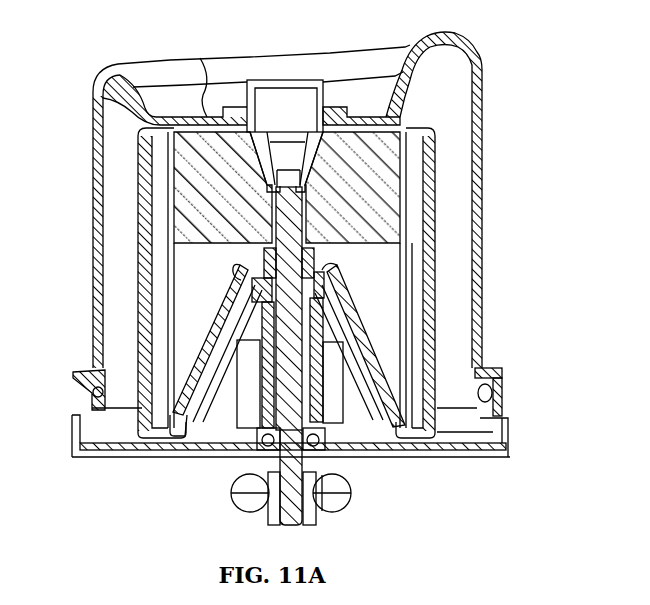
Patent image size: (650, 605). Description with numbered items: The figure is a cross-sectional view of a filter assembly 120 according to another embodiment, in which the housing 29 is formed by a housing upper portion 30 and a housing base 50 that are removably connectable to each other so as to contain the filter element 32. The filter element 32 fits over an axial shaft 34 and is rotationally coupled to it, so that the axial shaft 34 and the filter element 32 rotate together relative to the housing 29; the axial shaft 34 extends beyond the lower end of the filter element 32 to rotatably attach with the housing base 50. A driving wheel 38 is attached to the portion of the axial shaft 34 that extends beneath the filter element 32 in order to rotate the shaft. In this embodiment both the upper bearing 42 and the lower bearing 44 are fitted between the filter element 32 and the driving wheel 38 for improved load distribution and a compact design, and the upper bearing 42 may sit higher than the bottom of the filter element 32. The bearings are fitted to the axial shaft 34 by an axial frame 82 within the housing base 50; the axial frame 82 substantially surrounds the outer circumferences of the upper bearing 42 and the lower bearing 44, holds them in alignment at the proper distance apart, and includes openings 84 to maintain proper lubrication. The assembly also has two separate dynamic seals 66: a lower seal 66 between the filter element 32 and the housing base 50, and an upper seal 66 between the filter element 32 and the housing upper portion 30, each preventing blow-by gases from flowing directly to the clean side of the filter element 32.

The filter assembly 120 is at (150, 36).
The housing 29 is at (486, 96).
The housing upper portion 30 is at (486, 129).
The filter element 32 is at (436, 278).
The axial shaft 34 is at (290, 272).
The driving wheel 38 is at (233, 509).
The upper bearing 42 is at (236, 304).
The lower bearing 44 is at (236, 427).
The housing base 50 is at (505, 399).
The dynamic seal 66 is at (245, 117).
The axial frame 82 is at (225, 345).
The openings 84 is at (338, 452).